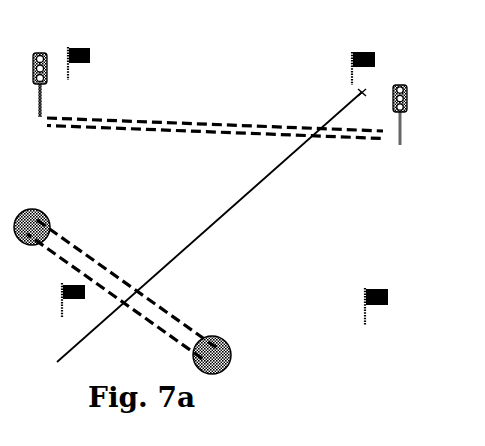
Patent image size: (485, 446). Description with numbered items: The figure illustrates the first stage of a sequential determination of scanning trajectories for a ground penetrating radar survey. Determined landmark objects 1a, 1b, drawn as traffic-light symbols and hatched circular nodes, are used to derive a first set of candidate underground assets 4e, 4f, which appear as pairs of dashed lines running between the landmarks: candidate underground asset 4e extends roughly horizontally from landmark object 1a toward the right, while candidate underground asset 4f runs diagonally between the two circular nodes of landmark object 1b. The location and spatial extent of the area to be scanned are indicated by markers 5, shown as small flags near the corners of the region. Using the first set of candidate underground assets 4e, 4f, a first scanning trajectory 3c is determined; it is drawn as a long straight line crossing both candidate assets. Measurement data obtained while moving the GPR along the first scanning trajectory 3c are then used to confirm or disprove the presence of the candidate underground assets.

The markers 5 is at (124, 51).
The landmark object 1a is at (92, 85).
The candidate underground asset 4e is at (215, 111).
The landmark object 1b is at (83, 210).
The candidate underground asset 4f is at (122, 281).
The first scanning trajectory 3c is at (211, 225).